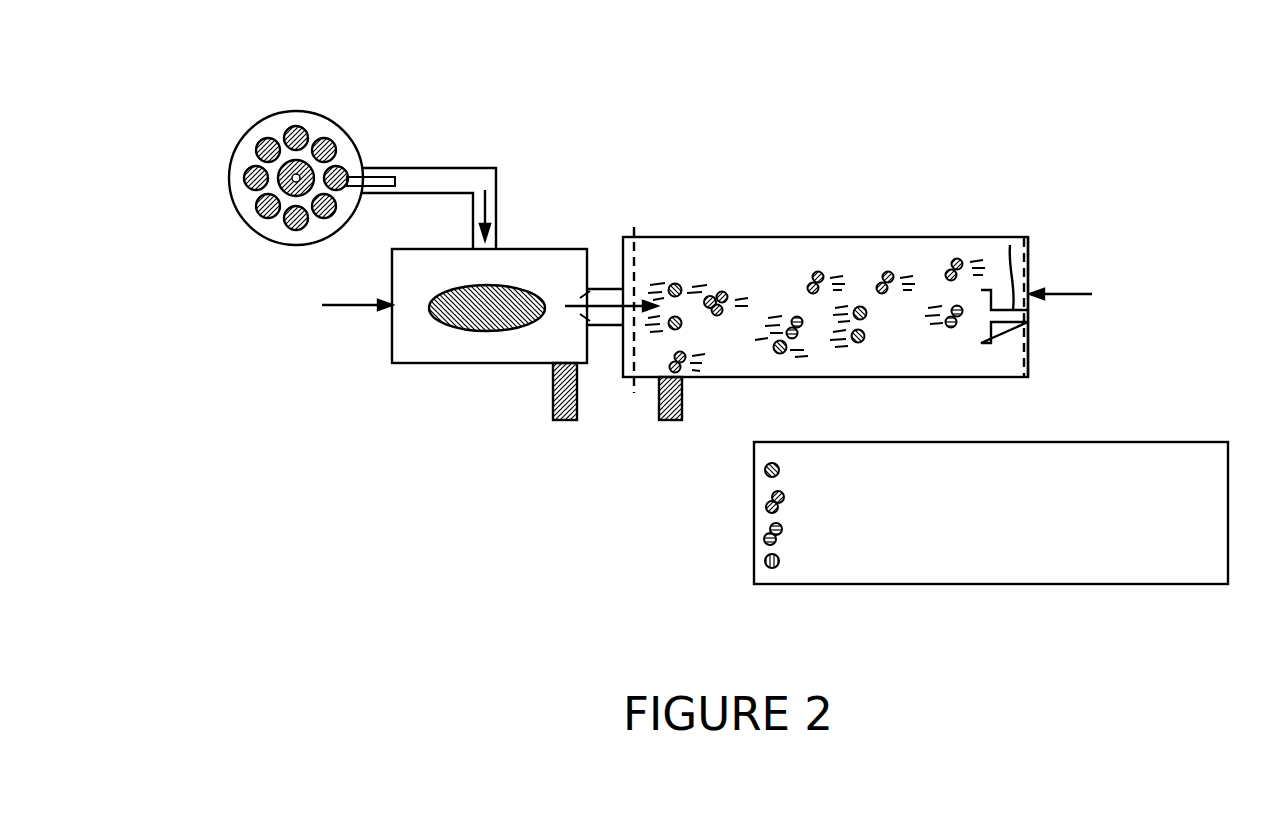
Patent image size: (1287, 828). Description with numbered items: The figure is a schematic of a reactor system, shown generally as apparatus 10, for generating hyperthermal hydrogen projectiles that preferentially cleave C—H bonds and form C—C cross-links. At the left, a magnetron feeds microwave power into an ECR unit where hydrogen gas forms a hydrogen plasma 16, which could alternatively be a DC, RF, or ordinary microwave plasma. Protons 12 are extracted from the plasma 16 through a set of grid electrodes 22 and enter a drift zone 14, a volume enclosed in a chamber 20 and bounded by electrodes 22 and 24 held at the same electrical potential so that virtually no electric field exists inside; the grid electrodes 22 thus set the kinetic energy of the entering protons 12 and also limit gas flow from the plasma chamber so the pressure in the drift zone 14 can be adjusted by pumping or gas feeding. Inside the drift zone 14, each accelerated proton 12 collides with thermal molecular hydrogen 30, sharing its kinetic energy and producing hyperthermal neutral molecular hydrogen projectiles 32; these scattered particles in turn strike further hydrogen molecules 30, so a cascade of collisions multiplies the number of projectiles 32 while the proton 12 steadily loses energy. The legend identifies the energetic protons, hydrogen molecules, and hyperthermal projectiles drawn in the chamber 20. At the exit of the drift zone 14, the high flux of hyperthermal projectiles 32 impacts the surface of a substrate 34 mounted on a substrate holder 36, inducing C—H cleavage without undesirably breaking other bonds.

The apparatus 10 is at (1098, 94).
The protons 12 is at (778, 347).
The drift zone 14 is at (663, 343).
The hydrogen plasma 16 is at (457, 285).
The chamber 20 is at (790, 237).
The grid electrodes 22 is at (632, 250).
The electrode 24 is at (1017, 258).
The molecular hydrogen 30 is at (957, 260).
The hyperthermal neutral molecular hydrogen projectiles 32 is at (800, 322).
The substrate 34 is at (993, 330).
The substrate holder 36 is at (1010, 245).